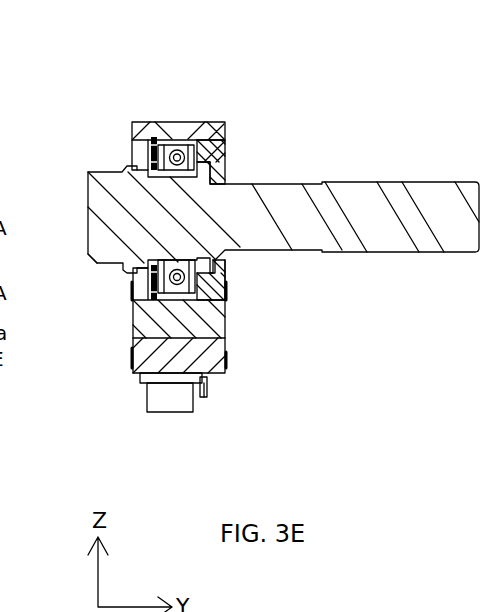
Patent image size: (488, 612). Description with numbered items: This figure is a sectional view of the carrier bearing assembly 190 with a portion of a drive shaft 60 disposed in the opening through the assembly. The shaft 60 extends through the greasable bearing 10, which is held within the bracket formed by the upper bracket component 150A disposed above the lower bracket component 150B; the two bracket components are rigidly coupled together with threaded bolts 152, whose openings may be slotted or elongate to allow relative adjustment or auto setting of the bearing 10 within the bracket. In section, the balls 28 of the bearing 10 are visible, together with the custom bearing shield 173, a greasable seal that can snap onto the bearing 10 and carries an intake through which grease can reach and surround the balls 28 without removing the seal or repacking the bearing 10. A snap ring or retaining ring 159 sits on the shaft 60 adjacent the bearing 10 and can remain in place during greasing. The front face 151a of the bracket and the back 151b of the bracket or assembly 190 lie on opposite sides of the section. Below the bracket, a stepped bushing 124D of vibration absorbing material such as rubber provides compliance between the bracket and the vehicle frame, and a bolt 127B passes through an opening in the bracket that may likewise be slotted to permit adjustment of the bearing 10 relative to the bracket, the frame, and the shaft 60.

The carrier bearing assembly 190 is at (208, 66).
The shaft 60 is at (350, 208).
The balls 28 is at (190, 128).
The bearing shield 173 is at (224, 123).
The retaining ring 159 is at (156, 137).
The bearing 10 is at (173, 140).
The upper bracket component 150A is at (226, 313).
The front face 151a is at (225, 343).
The lower bracket component 150B is at (227, 356).
The back 151b is at (133, 353).
The bushing 124D is at (227, 367).
The bolt 127B is at (208, 387).
The bolts 152 is at (147, 402).